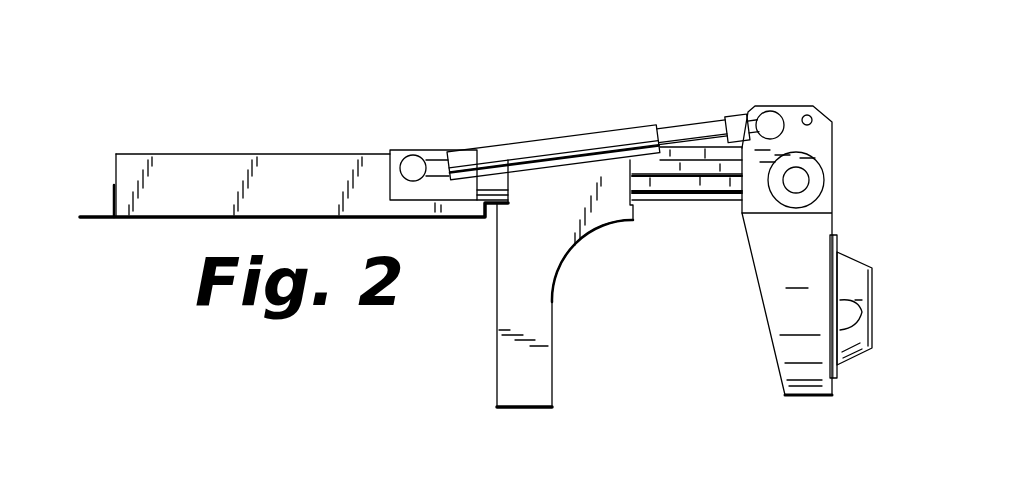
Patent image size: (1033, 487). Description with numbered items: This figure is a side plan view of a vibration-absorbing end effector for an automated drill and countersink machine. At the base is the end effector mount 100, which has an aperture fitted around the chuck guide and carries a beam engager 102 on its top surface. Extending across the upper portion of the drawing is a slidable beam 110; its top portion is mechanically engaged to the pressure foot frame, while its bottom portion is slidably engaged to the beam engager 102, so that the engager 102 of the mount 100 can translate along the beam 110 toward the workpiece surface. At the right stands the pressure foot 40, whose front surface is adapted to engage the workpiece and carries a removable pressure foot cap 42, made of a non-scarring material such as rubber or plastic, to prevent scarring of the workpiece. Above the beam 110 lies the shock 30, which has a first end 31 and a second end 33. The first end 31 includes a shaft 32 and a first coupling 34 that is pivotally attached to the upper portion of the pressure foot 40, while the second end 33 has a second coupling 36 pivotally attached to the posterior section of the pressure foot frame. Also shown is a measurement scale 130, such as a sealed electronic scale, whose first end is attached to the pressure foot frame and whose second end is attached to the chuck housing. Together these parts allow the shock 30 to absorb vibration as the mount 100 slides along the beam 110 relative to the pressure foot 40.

The measurement scale 130 is at (171, 154).
The second coupling 36 is at (422, 149).
The second end 33 is at (437, 92).
The shock 30 is at (511, 143).
The shaft 32 is at (690, 126).
The first end 31 is at (763, 86).
The first coupling 34 is at (811, 114).
The pressure foot 40 is at (833, 152).
The slidable beam 110 is at (683, 186).
The end effector mount 100 is at (525, 408).
The beam engager 102 is at (603, 228).
The pressure foot cap 42 is at (876, 328).